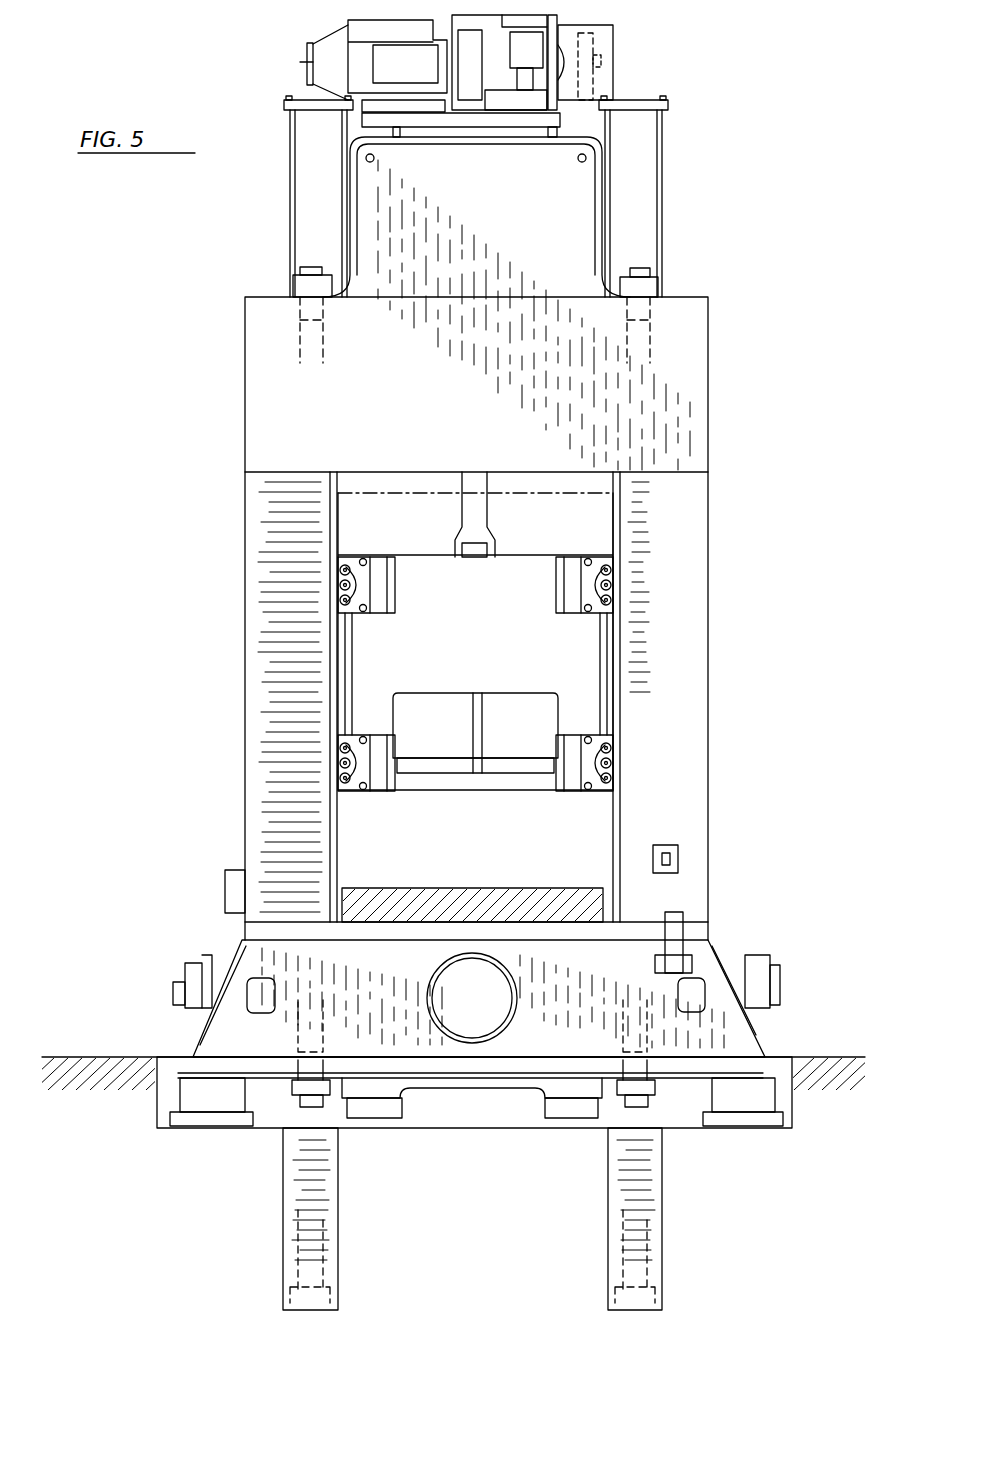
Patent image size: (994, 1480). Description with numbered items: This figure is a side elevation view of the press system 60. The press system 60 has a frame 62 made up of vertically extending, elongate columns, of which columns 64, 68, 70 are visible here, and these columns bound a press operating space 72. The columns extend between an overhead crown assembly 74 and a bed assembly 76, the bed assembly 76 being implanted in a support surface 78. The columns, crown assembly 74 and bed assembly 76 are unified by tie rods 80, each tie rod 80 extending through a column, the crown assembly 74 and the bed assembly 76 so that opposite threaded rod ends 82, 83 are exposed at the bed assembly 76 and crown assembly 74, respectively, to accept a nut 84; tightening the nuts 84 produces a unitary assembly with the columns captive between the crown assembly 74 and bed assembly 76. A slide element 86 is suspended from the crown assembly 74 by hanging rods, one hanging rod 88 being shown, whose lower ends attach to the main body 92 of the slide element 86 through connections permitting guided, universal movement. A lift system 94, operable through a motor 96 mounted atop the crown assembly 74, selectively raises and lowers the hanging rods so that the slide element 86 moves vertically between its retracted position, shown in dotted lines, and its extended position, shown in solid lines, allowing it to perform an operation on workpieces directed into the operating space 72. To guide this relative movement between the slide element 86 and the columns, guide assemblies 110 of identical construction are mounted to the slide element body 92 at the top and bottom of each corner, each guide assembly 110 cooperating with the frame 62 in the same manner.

The press system 60 is at (765, 580).
The frame 62 is at (710, 635).
The column 64 is at (677, 705).
The column 68 is at (275, 611).
The column 70 is at (245, 510).
The press operating space 72 is at (580, 817).
The crown assembly 74 is at (712, 372).
The bed assembly 76 is at (720, 1015).
The support surface 78 is at (812, 1057).
The tie rod 80 is at (310, 268).
The threaded rod end 82 is at (305, 1100).
The threaded rod end 83 is at (318, 268).
The nut 84 is at (295, 290).
The slide element 86 is at (365, 493).
The hanging rod 88 is at (488, 515).
The main body 92 is at (498, 587).
The lift system 94 is at (565, 13).
The motor 96 is at (300, 62).
The guide assembly 110 is at (335, 585).